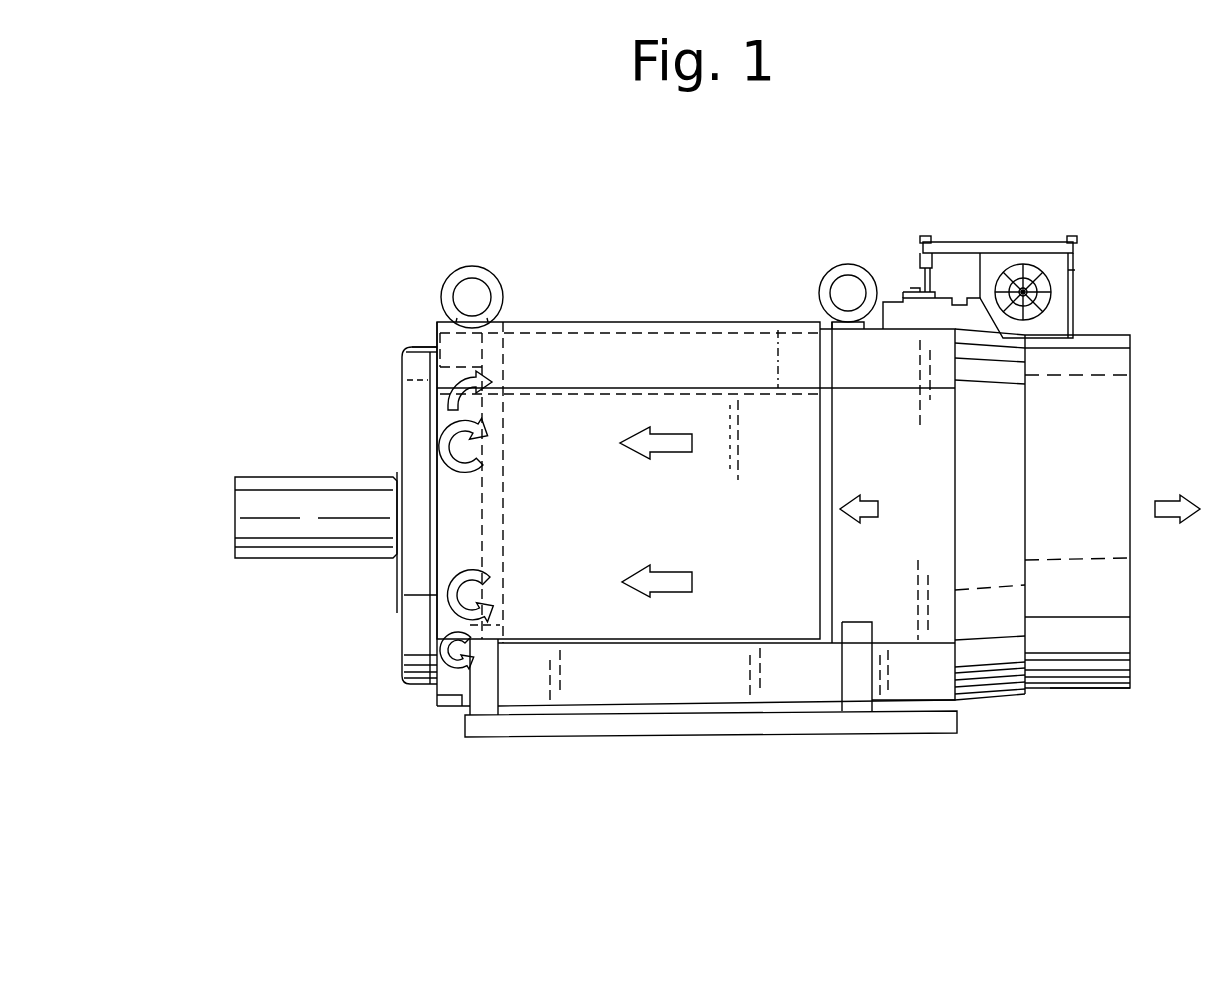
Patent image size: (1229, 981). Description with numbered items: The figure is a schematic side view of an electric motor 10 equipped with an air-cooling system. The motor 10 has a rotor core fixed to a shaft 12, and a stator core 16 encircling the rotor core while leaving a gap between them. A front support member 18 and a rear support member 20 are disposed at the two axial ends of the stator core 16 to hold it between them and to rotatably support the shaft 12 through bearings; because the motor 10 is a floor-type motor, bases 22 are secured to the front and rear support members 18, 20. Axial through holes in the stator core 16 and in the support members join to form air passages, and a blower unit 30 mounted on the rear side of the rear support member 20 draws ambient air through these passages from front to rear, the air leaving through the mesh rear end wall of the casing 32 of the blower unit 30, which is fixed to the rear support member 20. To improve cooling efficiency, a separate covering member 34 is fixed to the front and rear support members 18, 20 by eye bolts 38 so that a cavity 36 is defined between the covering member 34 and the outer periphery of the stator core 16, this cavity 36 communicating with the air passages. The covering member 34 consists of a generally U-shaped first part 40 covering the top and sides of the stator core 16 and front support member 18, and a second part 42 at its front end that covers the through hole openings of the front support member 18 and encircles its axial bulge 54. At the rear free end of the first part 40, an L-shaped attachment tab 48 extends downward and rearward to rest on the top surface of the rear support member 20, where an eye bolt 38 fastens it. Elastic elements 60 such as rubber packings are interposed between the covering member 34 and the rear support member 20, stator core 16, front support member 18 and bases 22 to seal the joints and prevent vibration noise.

The electric motor 10 is at (352, 272).
The shaft 12 is at (298, 558).
The stator core 16 is at (645, 692).
The front support member 18 is at (418, 633).
The rear support member 20 is at (937, 612).
The bases 22 is at (728, 722).
The blower unit 30 is at (1085, 690).
The casing 32 is at (1130, 622).
The covering member 34 is at (588, 322).
The cavity 36 is at (682, 332).
The eye bolts 38 is at (445, 300).
The first part 40 is at (718, 410).
The second part 42 is at (432, 408).
The attachment tab 48 is at (877, 318).
The axial bulge 54 is at (420, 362).
The elastic elements 60 is at (437, 692).